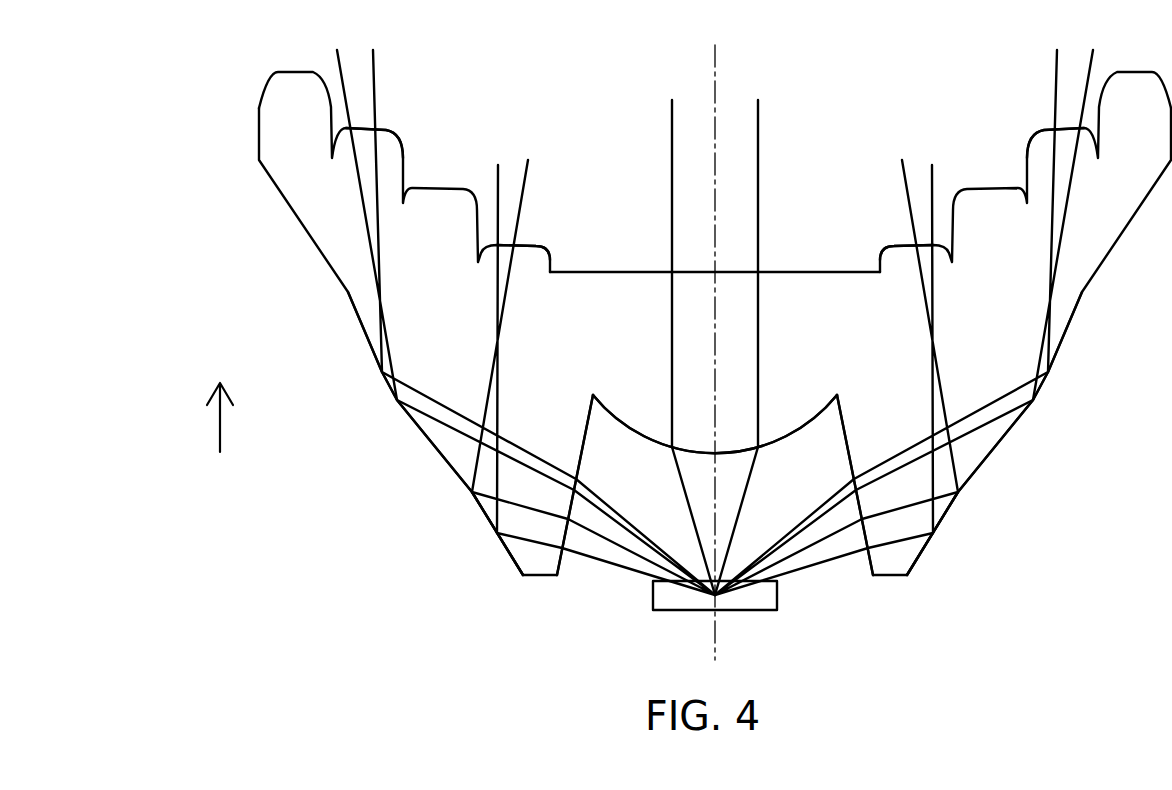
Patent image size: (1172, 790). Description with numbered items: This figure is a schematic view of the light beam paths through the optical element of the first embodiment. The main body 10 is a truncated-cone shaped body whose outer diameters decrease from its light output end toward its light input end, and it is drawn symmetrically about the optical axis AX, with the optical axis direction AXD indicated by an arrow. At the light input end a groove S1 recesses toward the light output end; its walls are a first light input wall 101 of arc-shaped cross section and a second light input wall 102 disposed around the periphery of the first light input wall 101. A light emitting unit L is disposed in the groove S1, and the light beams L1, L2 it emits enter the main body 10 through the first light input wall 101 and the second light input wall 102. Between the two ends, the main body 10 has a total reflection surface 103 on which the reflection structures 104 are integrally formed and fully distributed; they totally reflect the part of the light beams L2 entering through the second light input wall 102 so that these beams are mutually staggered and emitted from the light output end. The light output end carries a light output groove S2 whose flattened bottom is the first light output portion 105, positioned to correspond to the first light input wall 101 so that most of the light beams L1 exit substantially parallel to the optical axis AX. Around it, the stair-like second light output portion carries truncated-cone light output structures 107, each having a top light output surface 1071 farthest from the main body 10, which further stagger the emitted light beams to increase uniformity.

The main body 10 is at (293, 205).
The first light input wall 101 is at (810, 421).
The second light input wall 102 is at (583, 456).
The total reflection surface 103 is at (490, 527).
The reflection structures 104 is at (418, 430).
The first light output portion 105 is at (830, 272).
The light output structures 107 is at (280, 80).
The top light output surface 1071 is at (385, 128).
The light emitting unit L is at (778, 599).
The light beams L1 is at (672, 333).
The light beams L2 is at (641, 530).
The groove S1 is at (802, 458).
The light output groove S2 is at (948, 118).
The optical axis AX is at (717, 338).
The optical axis direction AXD is at (255, 417).